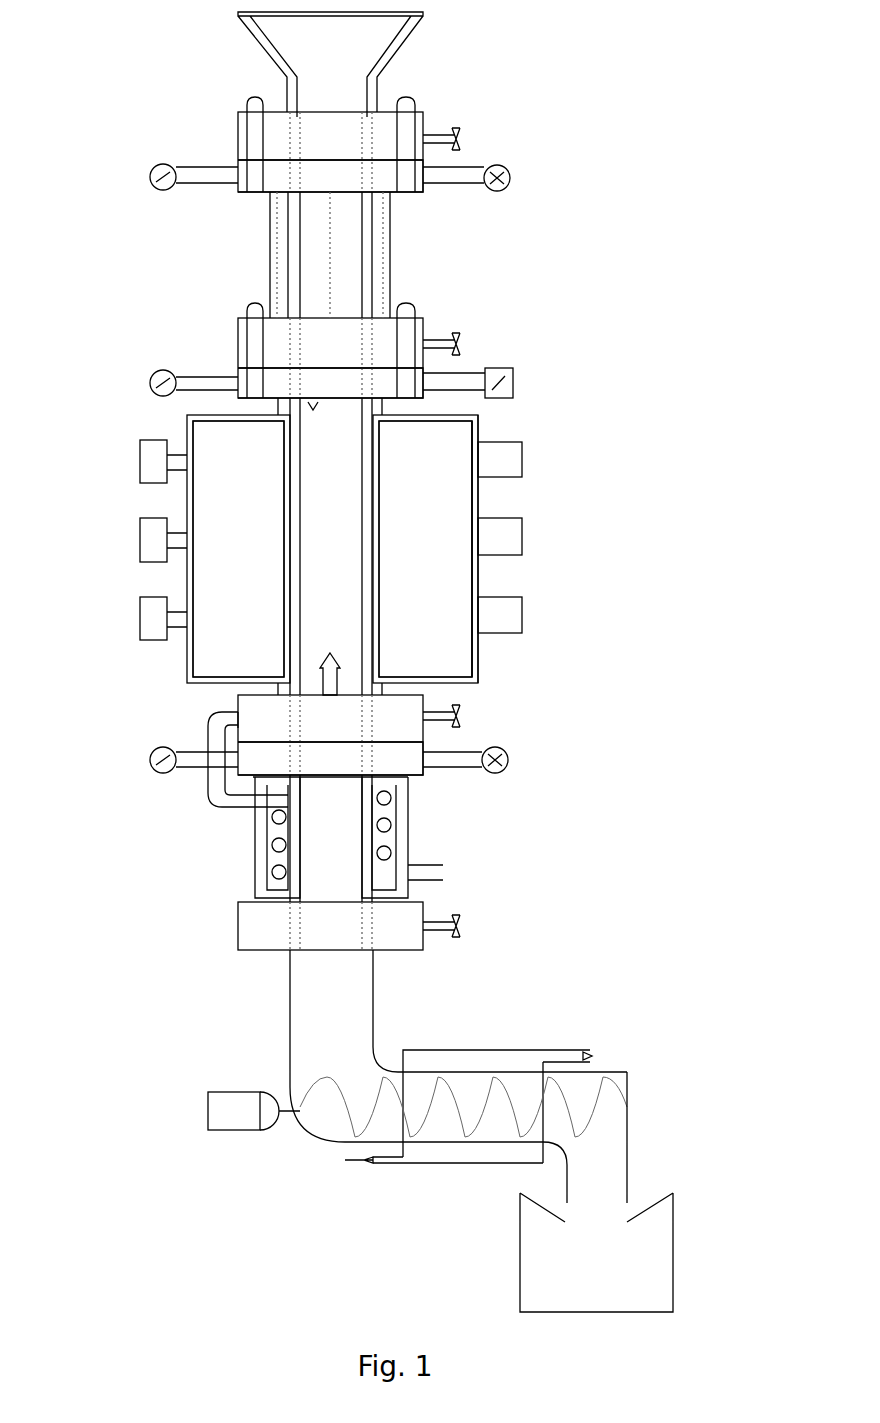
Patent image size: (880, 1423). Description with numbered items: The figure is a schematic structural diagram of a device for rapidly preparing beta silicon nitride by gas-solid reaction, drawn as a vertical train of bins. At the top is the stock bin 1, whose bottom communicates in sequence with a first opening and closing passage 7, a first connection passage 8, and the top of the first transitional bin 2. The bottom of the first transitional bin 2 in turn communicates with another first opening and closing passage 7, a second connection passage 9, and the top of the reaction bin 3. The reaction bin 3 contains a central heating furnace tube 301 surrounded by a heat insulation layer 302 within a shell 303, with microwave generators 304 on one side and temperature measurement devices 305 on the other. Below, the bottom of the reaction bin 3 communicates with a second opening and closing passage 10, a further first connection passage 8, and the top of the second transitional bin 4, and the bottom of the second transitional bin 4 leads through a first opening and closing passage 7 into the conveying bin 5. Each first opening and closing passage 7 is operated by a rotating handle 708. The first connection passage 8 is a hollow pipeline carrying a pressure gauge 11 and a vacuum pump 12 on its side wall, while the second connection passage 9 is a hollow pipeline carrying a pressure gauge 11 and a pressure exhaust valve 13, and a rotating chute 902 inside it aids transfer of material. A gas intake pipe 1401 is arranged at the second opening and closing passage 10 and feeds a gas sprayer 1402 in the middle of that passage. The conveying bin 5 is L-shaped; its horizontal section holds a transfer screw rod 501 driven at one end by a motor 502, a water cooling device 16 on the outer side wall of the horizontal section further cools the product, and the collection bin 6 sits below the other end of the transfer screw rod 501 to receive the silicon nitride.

The stock bin 1 is at (256, 30).
The first transitional bin 2 is at (370, 247).
The reaction bin 3 is at (163, 648).
The second transitional bin 4 is at (300, 836).
The conveying bin 5 is at (290, 998).
The collection bin 6 is at (680, 1228).
The first opening and closing passage 7 is at (238, 125).
The first connection passage 8 is at (270, 175).
The second connection passage 9 is at (415, 385).
The second opening and closing passage 10 is at (238, 730).
The pressure gauge 11 is at (151, 170).
The vacuum pump 12 is at (509, 170).
The pressure exhaust valve 13 is at (515, 380).
The water cooling device 16 is at (430, 1165).
The heating furnace tube 301 is at (290, 530).
The heat insulation layer 302 is at (430, 575).
The shell 303 is at (478, 497).
The microwave generator 304 is at (522, 457).
The temperature measurement device 305 is at (140, 455).
The transfer screw rod 501 is at (505, 1097).
The motor 502 is at (207, 1100).
The rotating handle 708 is at (460, 130).
The rotating chute 902 is at (313, 405).
The gas intake pipe 1401 is at (210, 780).
The gas sprayer 1402 is at (330, 653).